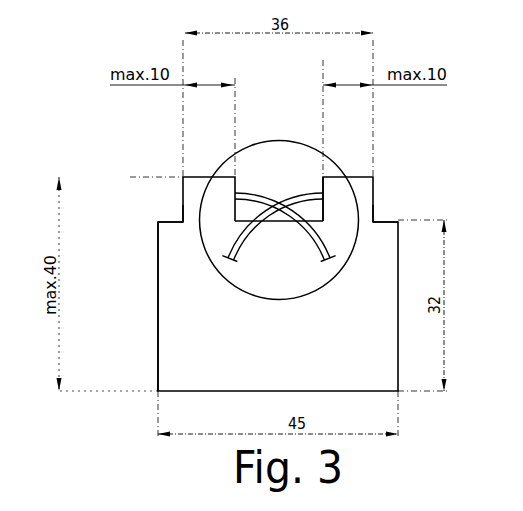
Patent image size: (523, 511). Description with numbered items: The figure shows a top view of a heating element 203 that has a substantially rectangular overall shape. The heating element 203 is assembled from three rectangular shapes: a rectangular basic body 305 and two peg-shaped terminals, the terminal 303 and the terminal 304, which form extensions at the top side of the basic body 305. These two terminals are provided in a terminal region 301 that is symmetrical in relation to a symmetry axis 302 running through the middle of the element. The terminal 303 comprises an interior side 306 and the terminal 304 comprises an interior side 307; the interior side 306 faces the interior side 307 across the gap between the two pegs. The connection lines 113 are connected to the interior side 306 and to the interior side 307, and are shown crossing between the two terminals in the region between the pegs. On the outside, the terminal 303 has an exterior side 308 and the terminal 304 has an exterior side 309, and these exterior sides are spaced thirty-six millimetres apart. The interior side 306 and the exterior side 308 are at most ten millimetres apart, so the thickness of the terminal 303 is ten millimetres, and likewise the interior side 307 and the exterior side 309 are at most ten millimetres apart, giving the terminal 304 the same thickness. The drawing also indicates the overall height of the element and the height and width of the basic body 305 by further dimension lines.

The heating element 203 is at (294, 222).
The terminal region 301 is at (330, 148).
The symmetry axis 302 is at (278, 306).
The terminal 303 is at (185, 175).
The terminal 304 is at (374, 175).
The rectangular basic body 305 is at (158, 318).
The interior side 306 is at (243, 176).
The interior side 307 is at (313, 176).
The exterior side 308 is at (181, 205).
The exterior side 309 is at (376, 207).
The connection lines 113 is at (236, 266).